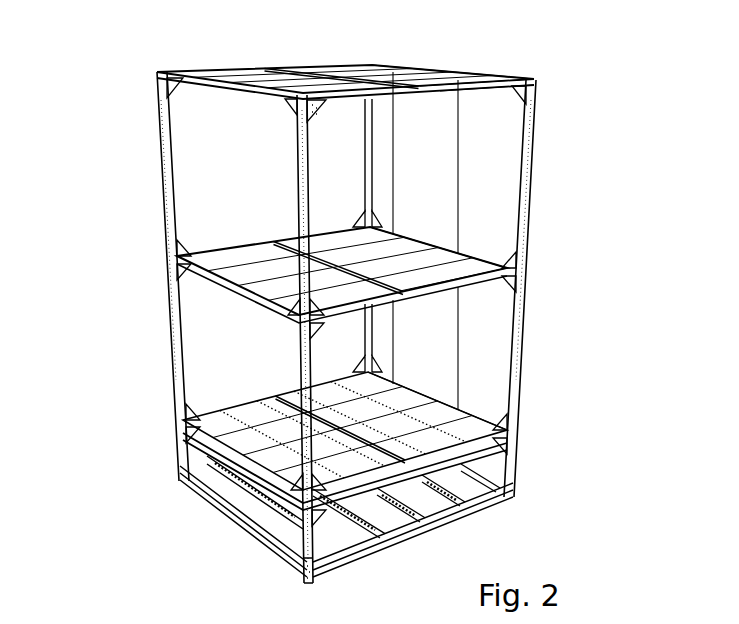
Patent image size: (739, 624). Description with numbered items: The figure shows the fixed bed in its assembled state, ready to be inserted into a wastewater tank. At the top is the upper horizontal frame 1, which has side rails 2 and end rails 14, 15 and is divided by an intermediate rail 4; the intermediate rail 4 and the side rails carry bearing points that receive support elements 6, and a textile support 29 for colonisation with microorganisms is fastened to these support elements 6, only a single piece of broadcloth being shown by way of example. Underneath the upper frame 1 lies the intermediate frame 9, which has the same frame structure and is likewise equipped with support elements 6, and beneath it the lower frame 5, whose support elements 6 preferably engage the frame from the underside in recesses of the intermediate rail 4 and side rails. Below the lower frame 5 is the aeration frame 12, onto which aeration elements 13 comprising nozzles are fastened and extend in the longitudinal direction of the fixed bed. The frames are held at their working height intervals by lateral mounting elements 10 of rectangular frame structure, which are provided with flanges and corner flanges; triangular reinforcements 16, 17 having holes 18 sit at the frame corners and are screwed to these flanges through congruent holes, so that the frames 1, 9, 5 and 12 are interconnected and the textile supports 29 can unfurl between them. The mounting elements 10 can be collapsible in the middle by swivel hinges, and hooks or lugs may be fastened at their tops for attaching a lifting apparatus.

The upper horizontal frame 1 is at (228, 52).
The side rail 2 is at (505, 80).
The intermediate rail 4 is at (340, 86).
The lower frame 5 is at (249, 385).
The support element 6 is at (385, 78).
The intermediate frame 9 is at (236, 236).
The lateral mounting element 10 is at (543, 169).
The aeration frame 12 is at (465, 507).
The aeration element 13 is at (495, 505).
The end rail 14 is at (487, 82).
The end rail 15 is at (203, 70).
The triangular reinforcement 16 is at (296, 94).
The triangular reinforcement 17 is at (322, 108).
The hole 18 is at (321, 577).
The textile support 29 is at (437, 170).